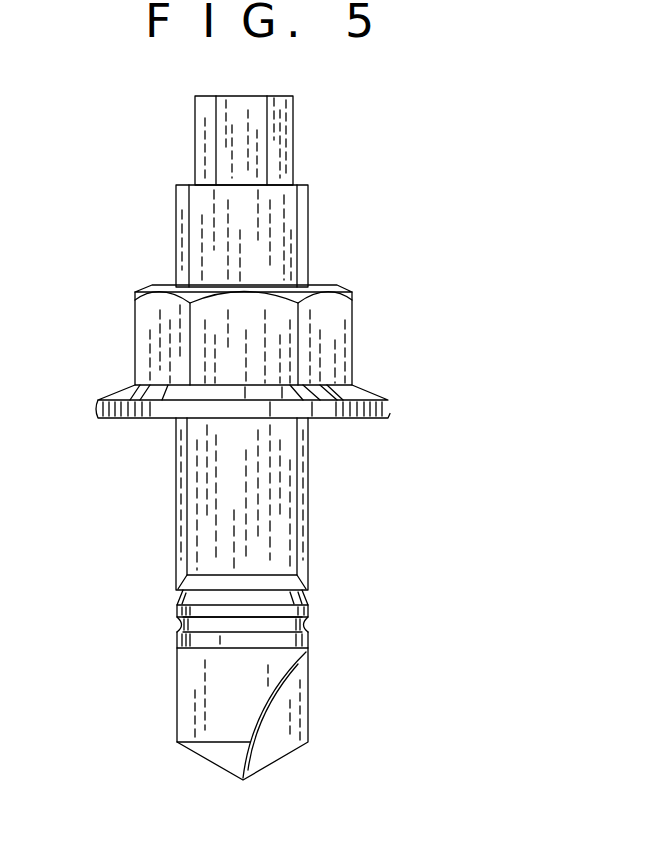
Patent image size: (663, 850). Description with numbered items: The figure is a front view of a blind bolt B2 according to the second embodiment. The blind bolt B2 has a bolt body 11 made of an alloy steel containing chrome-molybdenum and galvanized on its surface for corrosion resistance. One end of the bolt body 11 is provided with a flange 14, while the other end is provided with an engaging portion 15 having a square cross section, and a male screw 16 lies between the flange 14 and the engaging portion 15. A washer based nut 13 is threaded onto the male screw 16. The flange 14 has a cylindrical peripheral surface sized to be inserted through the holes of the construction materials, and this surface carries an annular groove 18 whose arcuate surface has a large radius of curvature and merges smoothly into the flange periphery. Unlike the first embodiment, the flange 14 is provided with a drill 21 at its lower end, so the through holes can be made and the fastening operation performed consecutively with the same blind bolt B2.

The blind bolt B2 is at (344, 99).
The bolt body 11 is at (325, 483).
The washer based nut 13 is at (340, 345).
The flange 14 is at (305, 603).
The engaging portion 15 is at (283, 157).
The male screw 16 is at (302, 250).
The annular groove 18 is at (181, 622).
The drill 21 is at (295, 720).